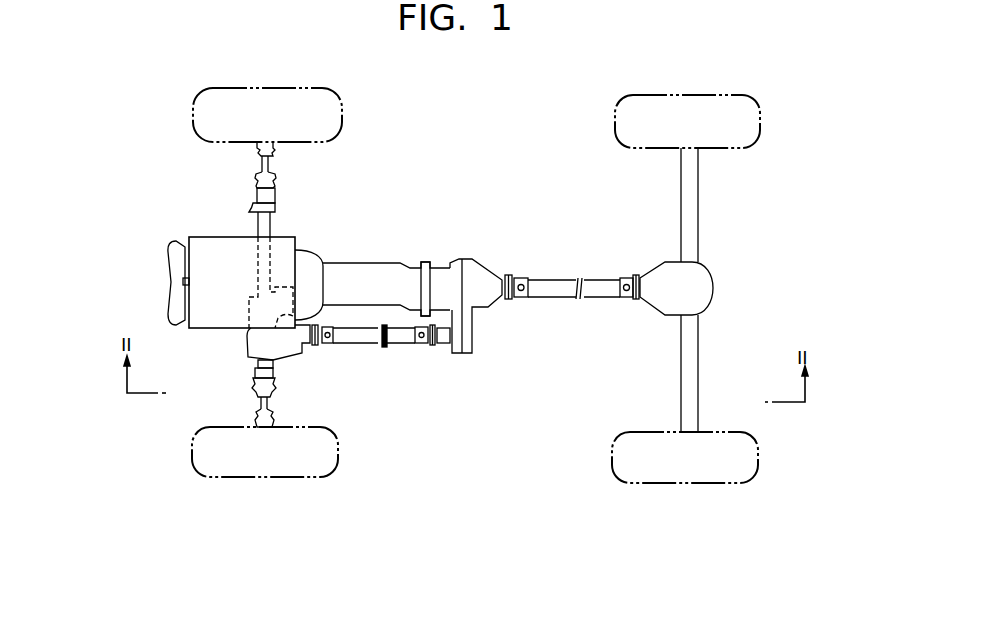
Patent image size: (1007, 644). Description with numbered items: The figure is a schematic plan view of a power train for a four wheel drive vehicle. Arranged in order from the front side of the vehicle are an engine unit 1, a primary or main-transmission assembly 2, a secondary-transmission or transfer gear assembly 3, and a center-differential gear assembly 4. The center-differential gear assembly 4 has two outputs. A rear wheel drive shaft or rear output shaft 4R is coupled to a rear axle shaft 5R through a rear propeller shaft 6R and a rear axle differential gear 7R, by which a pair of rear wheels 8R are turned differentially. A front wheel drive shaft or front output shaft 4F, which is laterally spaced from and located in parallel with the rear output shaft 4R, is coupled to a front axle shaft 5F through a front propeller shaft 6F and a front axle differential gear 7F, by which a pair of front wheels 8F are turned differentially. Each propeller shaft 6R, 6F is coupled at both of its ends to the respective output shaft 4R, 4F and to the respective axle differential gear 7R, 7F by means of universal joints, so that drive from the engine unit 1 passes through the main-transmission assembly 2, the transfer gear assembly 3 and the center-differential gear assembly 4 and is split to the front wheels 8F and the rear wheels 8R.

The engine unit 1 is at (289, 240).
The main-transmission assembly 2 is at (362, 263).
The transfer gear assembly 3 is at (436, 262).
The center-differential gear assembly 4 is at (470, 259).
The front output shaft 4F is at (445, 347).
The rear output shaft 4R is at (504, 300).
The front axle shaft 5F is at (258, 230).
The rear axle shaft 5R is at (699, 225).
The front propeller shaft 6F is at (395, 344).
The rear propeller shaft 6R is at (565, 298).
The front axle differential gear 7F is at (246, 337).
The rear axle differential gear 7R is at (663, 282).
The front wheels 8F is at (342, 128).
The rear wheels 8R is at (615, 135).